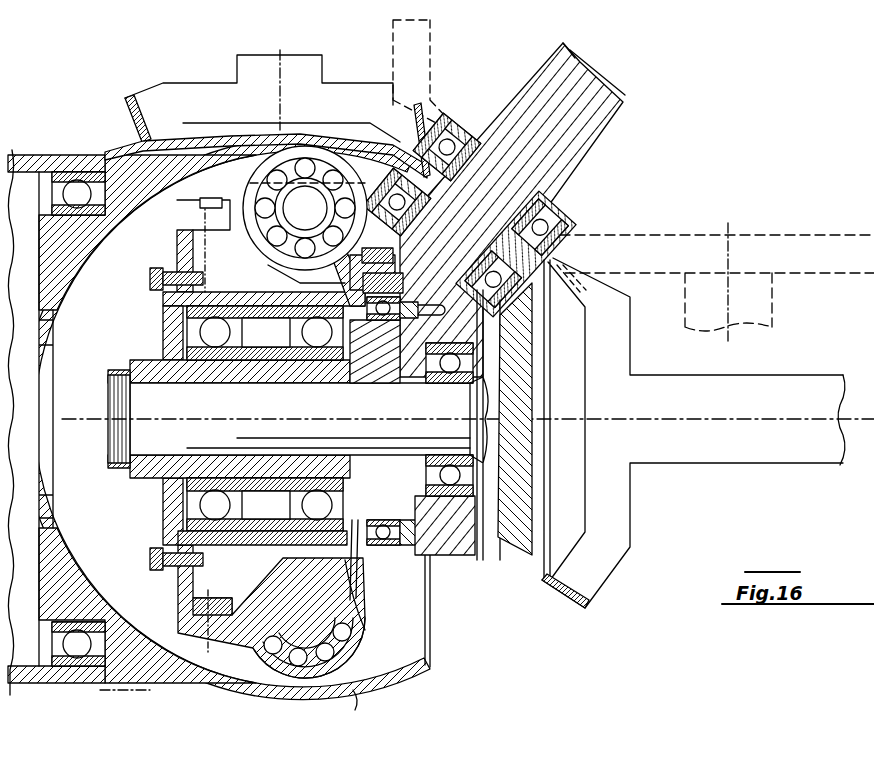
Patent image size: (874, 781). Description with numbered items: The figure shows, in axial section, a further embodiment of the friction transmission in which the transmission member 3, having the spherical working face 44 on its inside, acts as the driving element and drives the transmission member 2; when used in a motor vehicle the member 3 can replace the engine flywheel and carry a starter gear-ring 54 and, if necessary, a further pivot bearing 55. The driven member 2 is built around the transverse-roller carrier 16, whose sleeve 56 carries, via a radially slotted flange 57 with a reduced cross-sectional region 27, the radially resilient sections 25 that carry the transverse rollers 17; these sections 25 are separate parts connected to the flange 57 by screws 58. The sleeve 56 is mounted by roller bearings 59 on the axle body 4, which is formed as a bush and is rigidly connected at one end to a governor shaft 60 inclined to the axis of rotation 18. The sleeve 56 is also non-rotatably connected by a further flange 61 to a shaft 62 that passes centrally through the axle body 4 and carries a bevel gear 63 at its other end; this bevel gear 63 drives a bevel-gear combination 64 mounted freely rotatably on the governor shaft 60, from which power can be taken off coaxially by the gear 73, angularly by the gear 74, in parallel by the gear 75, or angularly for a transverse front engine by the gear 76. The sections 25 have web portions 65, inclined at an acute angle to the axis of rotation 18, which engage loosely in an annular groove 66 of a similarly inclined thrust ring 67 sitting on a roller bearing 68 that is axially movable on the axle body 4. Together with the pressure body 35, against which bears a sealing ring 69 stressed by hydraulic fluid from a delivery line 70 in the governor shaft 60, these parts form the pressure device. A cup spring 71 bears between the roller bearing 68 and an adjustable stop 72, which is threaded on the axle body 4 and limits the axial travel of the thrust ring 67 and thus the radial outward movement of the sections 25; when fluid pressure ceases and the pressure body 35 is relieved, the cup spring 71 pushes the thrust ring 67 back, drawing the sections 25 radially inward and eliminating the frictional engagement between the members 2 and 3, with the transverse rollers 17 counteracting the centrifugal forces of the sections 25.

The transmission member 2 is at (372, 620).
The transmission member 3 is at (395, 690).
The axle body 4 is at (190, 362).
The transverse-roller carrier 16 is at (162, 333).
The transverse rollers 17 is at (258, 238).
The axis of rotation 18 is at (84, 410).
The sections 25 is at (290, 275).
The reduced cross-sectional region 27 is at (190, 258).
The pressure body 35 is at (400, 320).
The spherical working face 44 is at (353, 690).
The starter gear-ring 54 is at (140, 693).
The pivot bearing 55 is at (75, 660).
The sleeve 56 is at (230, 548).
The radially slotted flange 57 is at (196, 226).
The screws 58 is at (213, 205).
The roller bearings 59 is at (302, 333).
The governor shaft 60 is at (598, 122).
The flange 61 is at (162, 495).
The shaft 62 is at (145, 428).
The bevel gear 63 is at (528, 447).
The bevel-gear combination 64 is at (566, 212).
The web portions 65 is at (380, 560).
The annular groove 66 is at (385, 572).
The thrust ring 67 is at (405, 575).
The roller bearing 68 is at (380, 520).
The sealing ring 69 is at (395, 520).
The delivery line 70 is at (607, 73).
The cup spring 71 is at (373, 300).
The adjustable stop 72 is at (358, 335).
The gear 73 is at (620, 488).
The gear 74 is at (793, 250).
The gear 75 is at (428, 52).
The gear 76 is at (178, 100).